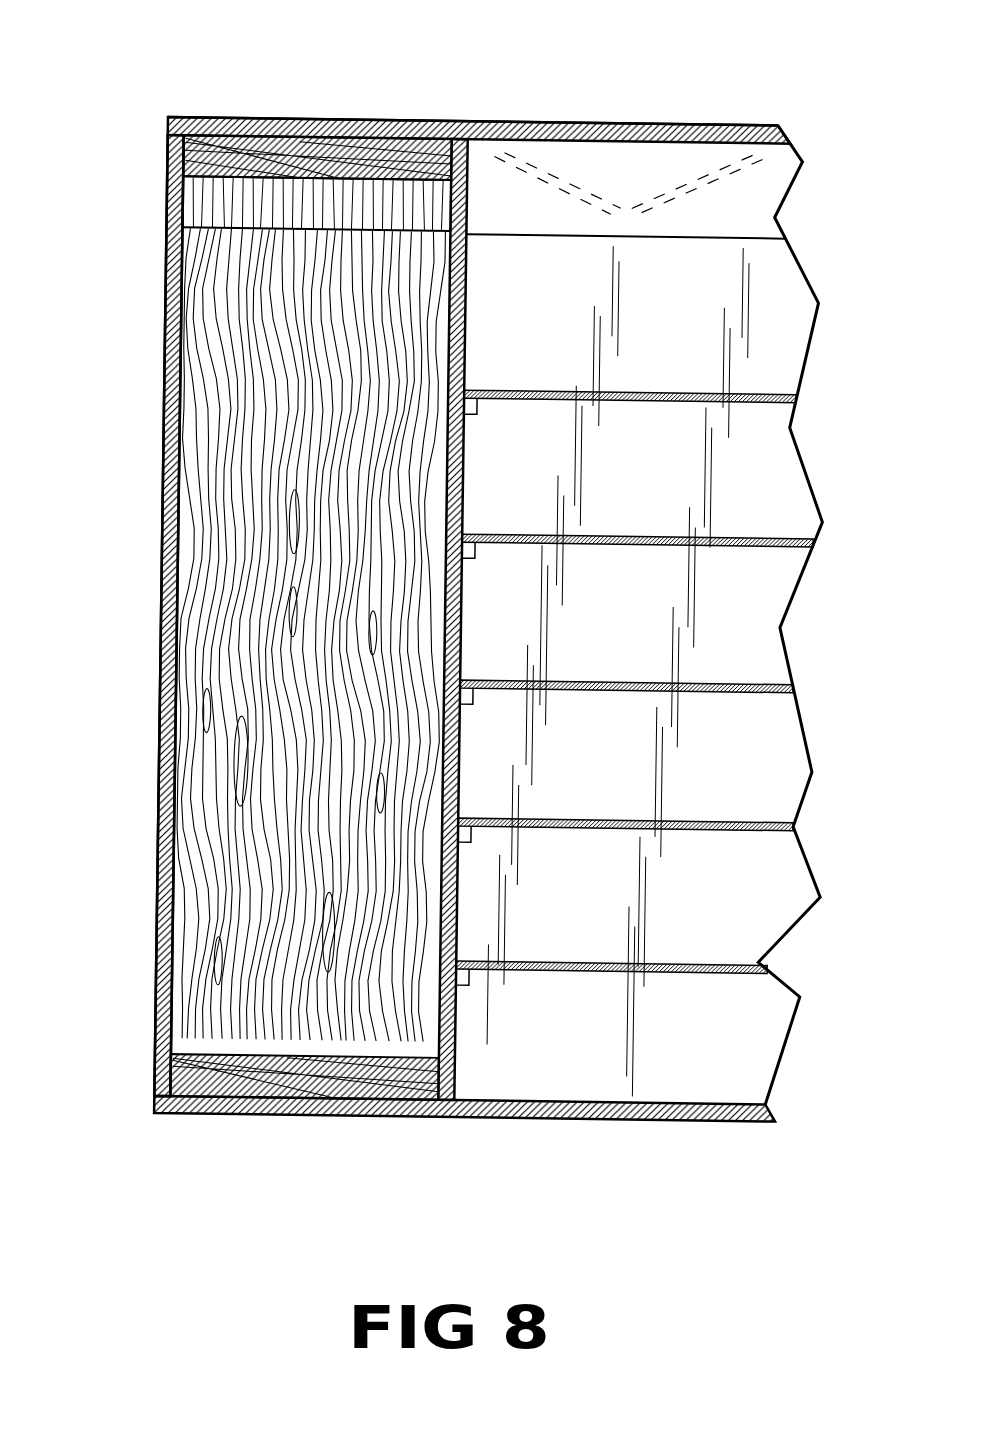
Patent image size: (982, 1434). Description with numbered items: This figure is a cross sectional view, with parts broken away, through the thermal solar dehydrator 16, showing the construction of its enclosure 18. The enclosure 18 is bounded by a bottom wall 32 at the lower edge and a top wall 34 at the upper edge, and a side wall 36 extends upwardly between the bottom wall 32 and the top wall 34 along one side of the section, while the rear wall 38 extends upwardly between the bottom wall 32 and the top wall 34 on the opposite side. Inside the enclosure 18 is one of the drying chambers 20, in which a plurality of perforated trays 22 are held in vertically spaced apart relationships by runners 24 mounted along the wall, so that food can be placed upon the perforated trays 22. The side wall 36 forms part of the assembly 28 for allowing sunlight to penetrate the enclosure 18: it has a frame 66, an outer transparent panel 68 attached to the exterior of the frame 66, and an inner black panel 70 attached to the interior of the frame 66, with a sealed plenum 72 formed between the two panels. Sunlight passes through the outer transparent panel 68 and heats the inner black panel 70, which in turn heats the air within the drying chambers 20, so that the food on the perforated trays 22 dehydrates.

The thermal solar dehydrator 16 is at (590, 60).
The enclosure 18 is at (437, 104).
The drying chambers 20 is at (658, 469).
The perforated trays 22 is at (654, 383).
The runners 24 is at (483, 546).
The assembly for allowing sunlight 28 is at (153, 377).
The bottom wall 32 is at (634, 1116).
The top wall 34 is at (368, 114).
The side walls 36 is at (154, 933).
The rear wall 38 is at (789, 280).
The frame 66 is at (188, 193).
The outer transparent panel 68 is at (169, 558).
The inner black panel 70 is at (470, 326).
The sealed plenum 72 is at (203, 715).